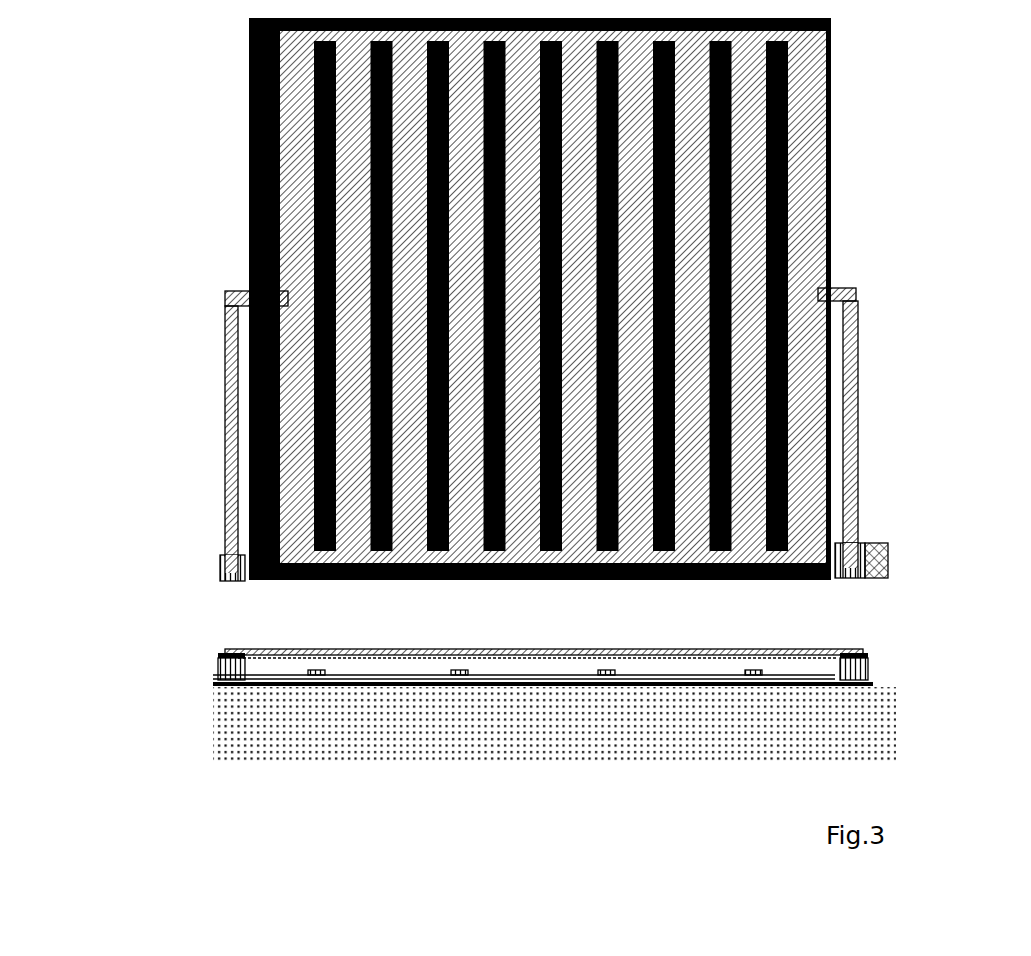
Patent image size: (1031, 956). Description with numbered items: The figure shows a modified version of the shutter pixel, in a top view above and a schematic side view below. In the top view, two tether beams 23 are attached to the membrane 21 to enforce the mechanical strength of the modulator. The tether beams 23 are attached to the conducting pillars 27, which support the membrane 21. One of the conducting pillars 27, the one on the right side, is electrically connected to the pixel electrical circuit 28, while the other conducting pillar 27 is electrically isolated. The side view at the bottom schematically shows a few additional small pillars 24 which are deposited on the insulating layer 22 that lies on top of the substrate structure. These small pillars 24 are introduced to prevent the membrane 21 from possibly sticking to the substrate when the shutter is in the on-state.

The membrane 21 is at (801, 125).
The insulating layer 22 is at (367, 680).
The tether beams 23 is at (220, 380).
The small pillars 24 is at (455, 665).
The conducting pillars 27 is at (217, 568).
The pixel electrical circuit 28 is at (880, 560).